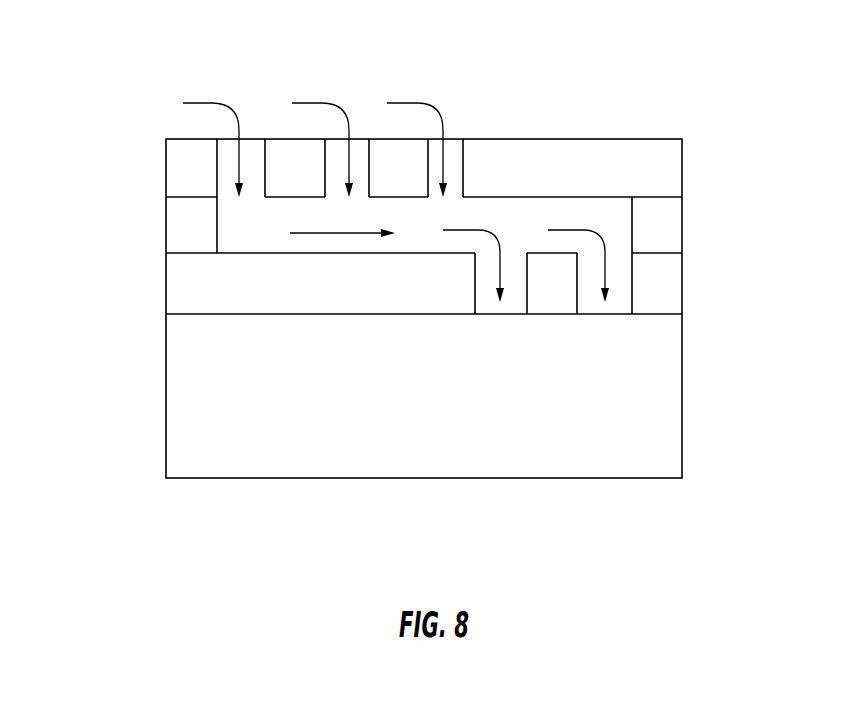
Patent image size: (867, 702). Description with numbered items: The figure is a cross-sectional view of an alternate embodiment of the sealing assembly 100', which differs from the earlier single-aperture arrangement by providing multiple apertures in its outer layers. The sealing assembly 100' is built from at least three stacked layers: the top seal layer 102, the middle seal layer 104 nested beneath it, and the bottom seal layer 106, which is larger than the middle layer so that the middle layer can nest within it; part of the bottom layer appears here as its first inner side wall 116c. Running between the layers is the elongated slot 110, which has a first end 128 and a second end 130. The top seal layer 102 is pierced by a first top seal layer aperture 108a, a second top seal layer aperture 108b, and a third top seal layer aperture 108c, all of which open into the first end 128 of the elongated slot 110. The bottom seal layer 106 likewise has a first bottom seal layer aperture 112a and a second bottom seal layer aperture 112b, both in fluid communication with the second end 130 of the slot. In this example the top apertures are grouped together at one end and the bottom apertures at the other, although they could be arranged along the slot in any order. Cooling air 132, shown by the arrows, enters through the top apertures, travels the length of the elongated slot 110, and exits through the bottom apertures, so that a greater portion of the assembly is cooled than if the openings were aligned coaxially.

The sealing assembly 100' is at (77, 42).
The top seal layer 102 is at (682, 175).
The middle seal layer 104 is at (682, 227).
The bottom seal layer 106 is at (682, 285).
The first top seal layer aperture 108a is at (253, 145).
The second top seal layer aperture 108b is at (360, 143).
The third top seal layer aperture 108c is at (455, 143).
The elongated slot 110 is at (422, 237).
The first bottom seal layer aperture 112a is at (518, 305).
The second bottom seal layer aperture 112b is at (617, 305).
The first inner side wall 116c is at (638, 417).
The first end 128 is at (228, 223).
The second end 130 is at (590, 208).
The cooling air 132 is at (211, 102).